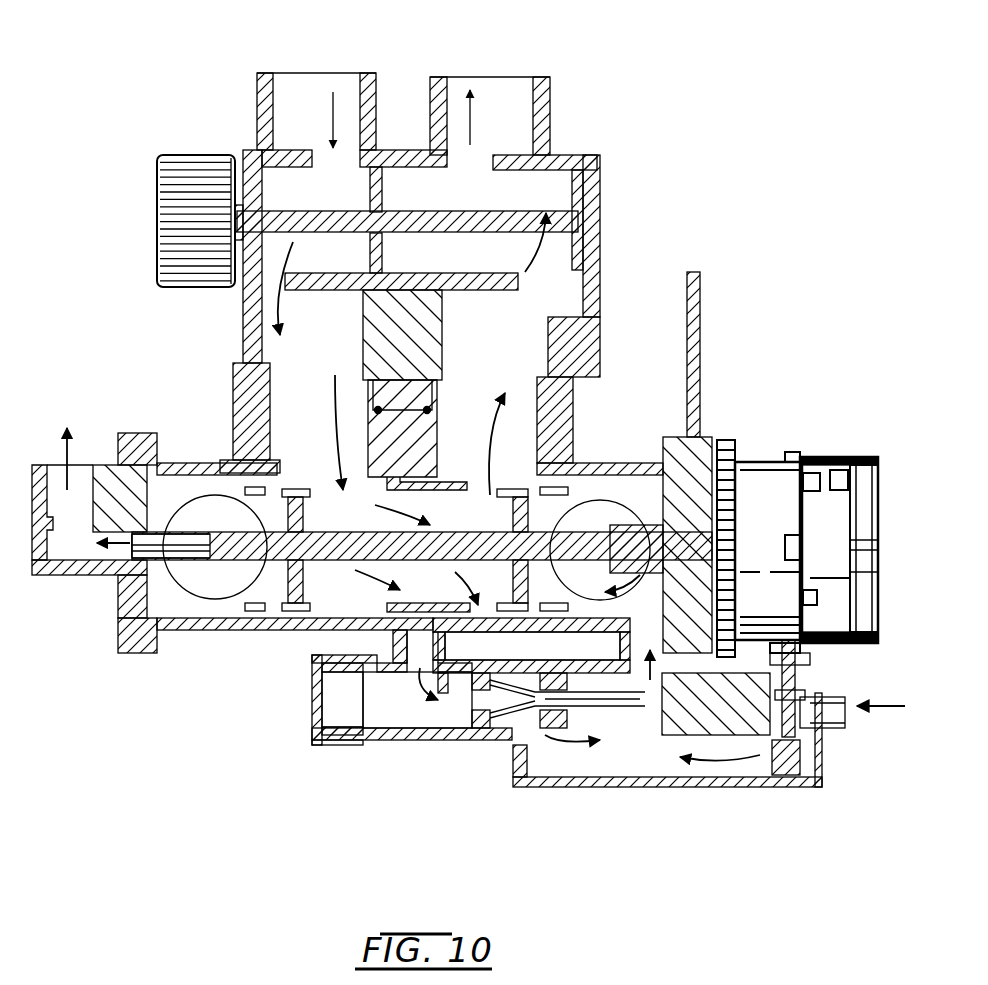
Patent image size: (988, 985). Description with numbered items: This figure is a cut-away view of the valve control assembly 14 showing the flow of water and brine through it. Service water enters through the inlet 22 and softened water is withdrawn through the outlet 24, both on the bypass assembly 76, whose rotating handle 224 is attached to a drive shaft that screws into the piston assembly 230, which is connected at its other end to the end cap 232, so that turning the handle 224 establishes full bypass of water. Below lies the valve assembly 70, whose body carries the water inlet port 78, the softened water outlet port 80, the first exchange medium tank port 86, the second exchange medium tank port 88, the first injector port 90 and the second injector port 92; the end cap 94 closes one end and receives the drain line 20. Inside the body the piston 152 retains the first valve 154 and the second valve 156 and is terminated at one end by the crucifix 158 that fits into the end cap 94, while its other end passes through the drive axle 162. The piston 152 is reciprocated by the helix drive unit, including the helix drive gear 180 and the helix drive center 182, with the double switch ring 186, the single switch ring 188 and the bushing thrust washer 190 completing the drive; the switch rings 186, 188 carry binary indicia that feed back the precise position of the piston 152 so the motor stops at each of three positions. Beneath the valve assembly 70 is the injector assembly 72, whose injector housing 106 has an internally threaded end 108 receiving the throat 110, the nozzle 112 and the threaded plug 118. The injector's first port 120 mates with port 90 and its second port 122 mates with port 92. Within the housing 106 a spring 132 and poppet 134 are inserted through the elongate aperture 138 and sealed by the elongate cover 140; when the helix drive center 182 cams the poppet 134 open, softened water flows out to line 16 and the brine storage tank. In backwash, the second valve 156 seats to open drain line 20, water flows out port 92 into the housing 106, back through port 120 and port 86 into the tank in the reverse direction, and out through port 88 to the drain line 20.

The valve control assembly 14 is at (697, 112).
The line 16 is at (60, 482).
The line 20 is at (842, 696).
The inlet 22 is at (330, 85).
The outlet 24 is at (498, 88).
The valve assembly 70 is at (157, 410).
The injector assembly 72 is at (427, 787).
The bypass assembly 76 is at (620, 186).
The water inlet port 78 is at (245, 430).
The softened water outlet port 80 is at (570, 430).
The first exchange medium tank port 86 is at (596, 510).
The second exchange medium tank port 88 is at (222, 585).
The first injector port 90 is at (620, 648).
The second injector port 92 is at (393, 644).
The end cap 94 is at (50, 572).
The injector housing 106 is at (375, 746).
The internally threaded end 108 is at (322, 746).
The throat 110 is at (600, 710).
The nozzle 112 is at (500, 722).
The threaded plug 118 is at (312, 695).
The first injector port 120 is at (660, 762).
The second injector port 122 is at (417, 702).
The spring 132 is at (790, 770).
The poppet 134 is at (805, 748).
The elongate aperture 138 is at (740, 790).
The elongate cover 140 is at (752, 790).
The piston 152 is at (378, 534).
The first valve 154 is at (503, 533).
The second valve 156 is at (305, 582).
The crucifix 158 is at (152, 576).
The drive axle 162 is at (700, 340).
The helix drive gear 180 is at (728, 440).
The helix drive center 182 is at (770, 462).
The switch ring double 186 is at (830, 457).
The switch ring single 188 is at (852, 462).
The bushing thrust washer 190 is at (877, 622).
The rotating handle 224 is at (205, 165).
The piston assembly 230 is at (472, 226).
The end cap 232 is at (600, 240).